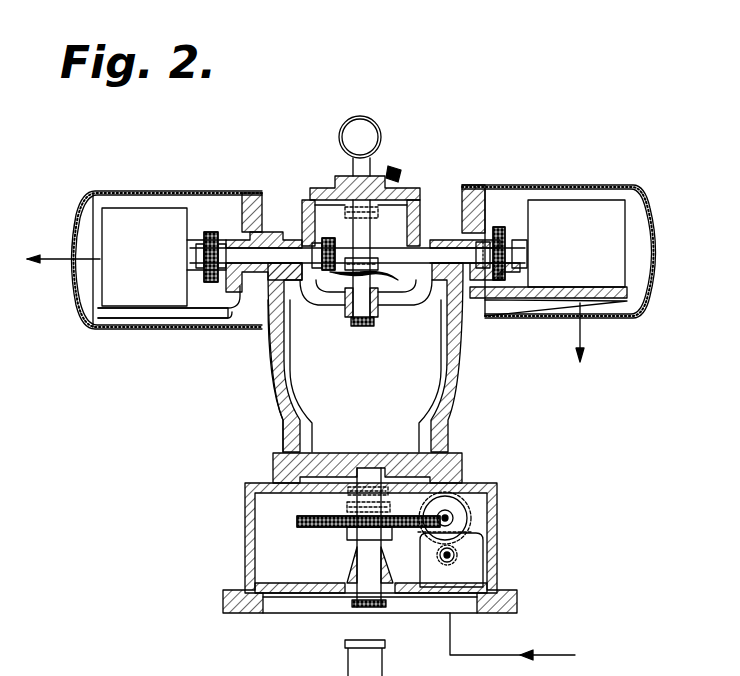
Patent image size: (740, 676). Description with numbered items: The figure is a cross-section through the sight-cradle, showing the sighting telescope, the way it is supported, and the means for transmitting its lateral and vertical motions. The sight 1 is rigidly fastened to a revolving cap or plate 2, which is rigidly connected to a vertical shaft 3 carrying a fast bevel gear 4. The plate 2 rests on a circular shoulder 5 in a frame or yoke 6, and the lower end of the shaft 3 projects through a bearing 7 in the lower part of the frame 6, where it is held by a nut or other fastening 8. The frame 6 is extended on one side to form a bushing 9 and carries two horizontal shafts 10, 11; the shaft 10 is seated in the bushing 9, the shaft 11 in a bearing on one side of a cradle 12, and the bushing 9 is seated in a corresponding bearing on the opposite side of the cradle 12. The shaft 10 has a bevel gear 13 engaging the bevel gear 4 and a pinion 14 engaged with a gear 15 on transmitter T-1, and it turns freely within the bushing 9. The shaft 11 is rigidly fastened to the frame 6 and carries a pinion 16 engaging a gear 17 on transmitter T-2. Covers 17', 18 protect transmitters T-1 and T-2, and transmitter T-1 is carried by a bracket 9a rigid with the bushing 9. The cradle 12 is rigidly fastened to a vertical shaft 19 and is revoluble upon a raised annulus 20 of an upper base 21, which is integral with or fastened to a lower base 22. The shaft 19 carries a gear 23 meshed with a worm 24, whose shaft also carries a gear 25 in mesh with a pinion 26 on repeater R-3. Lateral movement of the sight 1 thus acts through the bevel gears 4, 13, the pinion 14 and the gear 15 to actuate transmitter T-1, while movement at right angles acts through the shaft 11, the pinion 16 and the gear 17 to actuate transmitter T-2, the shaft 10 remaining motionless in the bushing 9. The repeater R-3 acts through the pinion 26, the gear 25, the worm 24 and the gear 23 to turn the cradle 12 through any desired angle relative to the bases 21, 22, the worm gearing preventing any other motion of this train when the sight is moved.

The sight 1 is at (376, 140).
The revolving cap or plate 2 is at (418, 190).
The vertical shaft 3 is at (372, 240).
The bevel gear 4 is at (364, 261).
The circular shoulder 5 is at (304, 200).
The frame or yoke 6 is at (316, 300).
The bearing 7 is at (380, 317).
The nut or other fastening 8 is at (358, 326).
The bushing 9 is at (226, 247).
The bracket 9a is at (150, 313).
The horizontal shaft 10 is at (225, 262).
The horizontal shaft 11 is at (470, 300).
The cradle 12 is at (455, 370).
The bevel gear 13 is at (330, 237).
The pinion 14 is at (206, 273).
The gear 15 is at (210, 235).
The pinion 16 is at (500, 264).
The gear 17 is at (505, 236).
The cover 17' is at (144, 243).
The cover 18 is at (545, 185).
The vertical shaft 19 is at (367, 565).
The raised annulus 20 is at (272, 484).
The upper base 21 is at (497, 552).
The lower base 22 is at (507, 613).
The gear 23 is at (318, 527).
The worm 24 is at (452, 515).
The gear 25 is at (462, 525).
The pinion 26 is at (440, 565).
The repeater R-3 is at (462, 568).